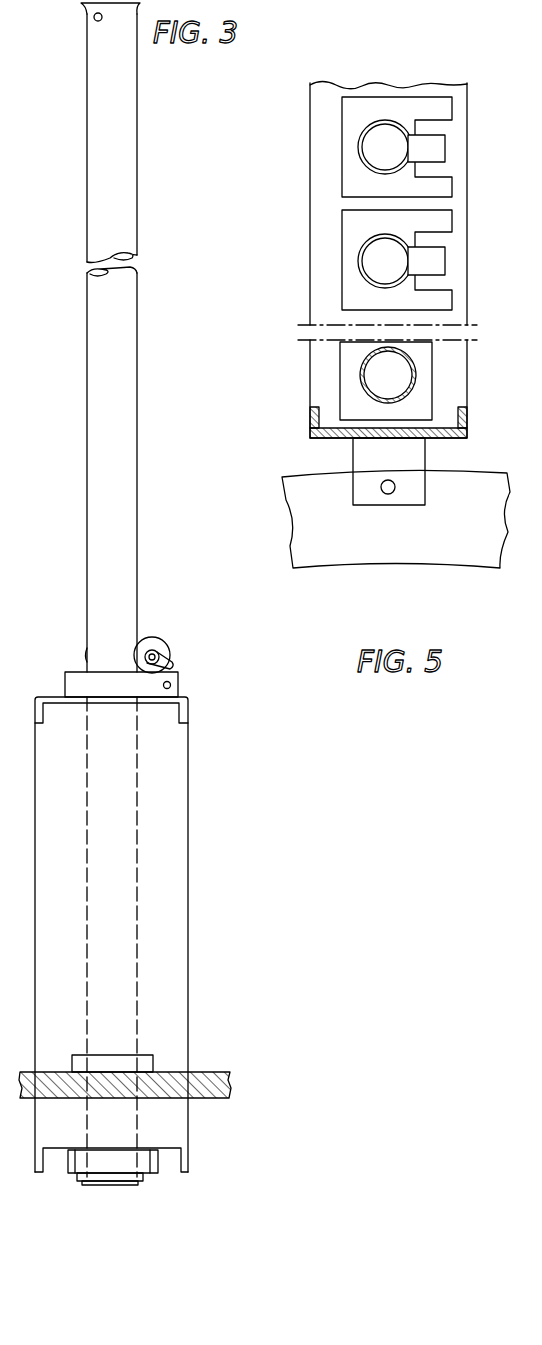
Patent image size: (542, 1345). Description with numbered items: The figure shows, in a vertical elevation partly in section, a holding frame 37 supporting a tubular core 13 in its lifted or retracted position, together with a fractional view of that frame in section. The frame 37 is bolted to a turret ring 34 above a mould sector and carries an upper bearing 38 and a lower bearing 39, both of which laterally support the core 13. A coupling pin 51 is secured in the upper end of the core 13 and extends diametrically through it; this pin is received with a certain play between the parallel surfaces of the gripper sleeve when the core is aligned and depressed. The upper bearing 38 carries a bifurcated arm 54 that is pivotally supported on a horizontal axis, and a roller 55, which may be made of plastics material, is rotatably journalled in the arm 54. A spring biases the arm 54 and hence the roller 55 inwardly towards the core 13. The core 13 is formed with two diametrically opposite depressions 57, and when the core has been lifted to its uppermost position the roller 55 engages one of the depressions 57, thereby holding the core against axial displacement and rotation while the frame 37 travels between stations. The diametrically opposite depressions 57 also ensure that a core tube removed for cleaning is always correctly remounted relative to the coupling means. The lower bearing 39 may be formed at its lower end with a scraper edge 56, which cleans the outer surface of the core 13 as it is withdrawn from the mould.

In FIG. 3, the core 13 is at (125, 239).
In FIG. 5, the core 13 is at (362, 262).
In FIG. 3, the coupling pin 51 is at (95, 20).
In FIG. 3, the ring 34 is at (202, 1083).
In FIG. 5, the ring 34 is at (333, 547).
In FIG. 3, the frame 37 is at (173, 782).
In FIG. 5, the frame 37 is at (445, 417).
In FIG. 3, the upper bearing 38 is at (117, 685).
In FIG. 5, the upper bearing 38 is at (348, 150).
In FIG. 3, the lower bearing 39 is at (142, 1158).
In FIG. 5, the lower bearing 39 is at (425, 370).
In FIG. 3, the bifurcated arm 54 is at (160, 665).
In FIG. 5, the bifurcated arm 54 is at (433, 130).
In FIG. 3, the roller 55 is at (160, 641).
In FIG. 5, the roller 55 is at (425, 145).
In FIG. 3, the scraper edge 56 is at (138, 1173).
In FIG. 3, the depression 57 is at (87, 657).